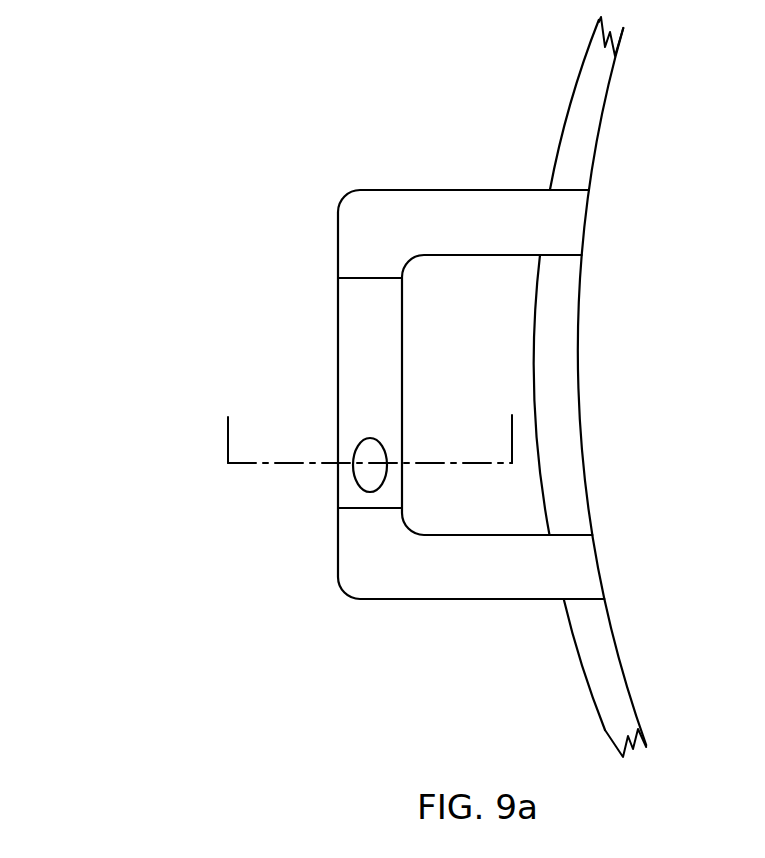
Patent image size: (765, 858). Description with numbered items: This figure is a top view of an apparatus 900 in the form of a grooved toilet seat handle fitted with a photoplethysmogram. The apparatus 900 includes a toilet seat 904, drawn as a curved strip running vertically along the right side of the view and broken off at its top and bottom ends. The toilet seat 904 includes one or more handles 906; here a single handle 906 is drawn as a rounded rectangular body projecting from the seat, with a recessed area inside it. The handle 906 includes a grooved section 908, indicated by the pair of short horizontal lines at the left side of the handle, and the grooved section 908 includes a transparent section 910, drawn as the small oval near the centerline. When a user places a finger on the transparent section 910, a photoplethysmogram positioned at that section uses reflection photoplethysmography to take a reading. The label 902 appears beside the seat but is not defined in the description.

The apparatus 900 is at (133, 86).
The vehicle body surface 902 is at (688, 384).
The toilet seat 904 is at (573, 127).
The handle 906 is at (433, 217).
The grooved section 908 is at (352, 313).
The transparent section 910 is at (365, 484).